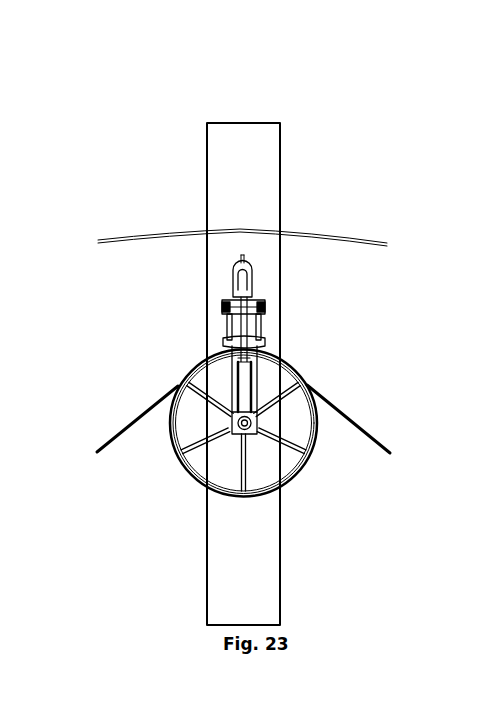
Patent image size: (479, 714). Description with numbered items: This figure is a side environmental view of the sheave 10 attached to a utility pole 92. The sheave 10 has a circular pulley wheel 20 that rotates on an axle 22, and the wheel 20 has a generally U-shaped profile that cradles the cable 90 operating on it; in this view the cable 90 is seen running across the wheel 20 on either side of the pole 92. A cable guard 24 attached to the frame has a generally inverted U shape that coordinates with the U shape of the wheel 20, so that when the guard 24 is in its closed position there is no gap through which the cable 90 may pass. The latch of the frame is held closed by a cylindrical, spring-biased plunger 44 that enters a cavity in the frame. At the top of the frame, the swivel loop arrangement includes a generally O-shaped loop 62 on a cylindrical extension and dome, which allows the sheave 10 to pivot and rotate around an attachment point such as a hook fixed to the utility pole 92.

The sheave 10 is at (135, 350).
The pulley wheel 20 is at (187, 477).
The axle 22 is at (178, 441).
The cable guard 24 is at (257, 343).
The plunger 44 is at (245, 263).
The loop 62 is at (233, 285).
The cable 90 is at (357, 423).
The utility pole 92 is at (263, 163).